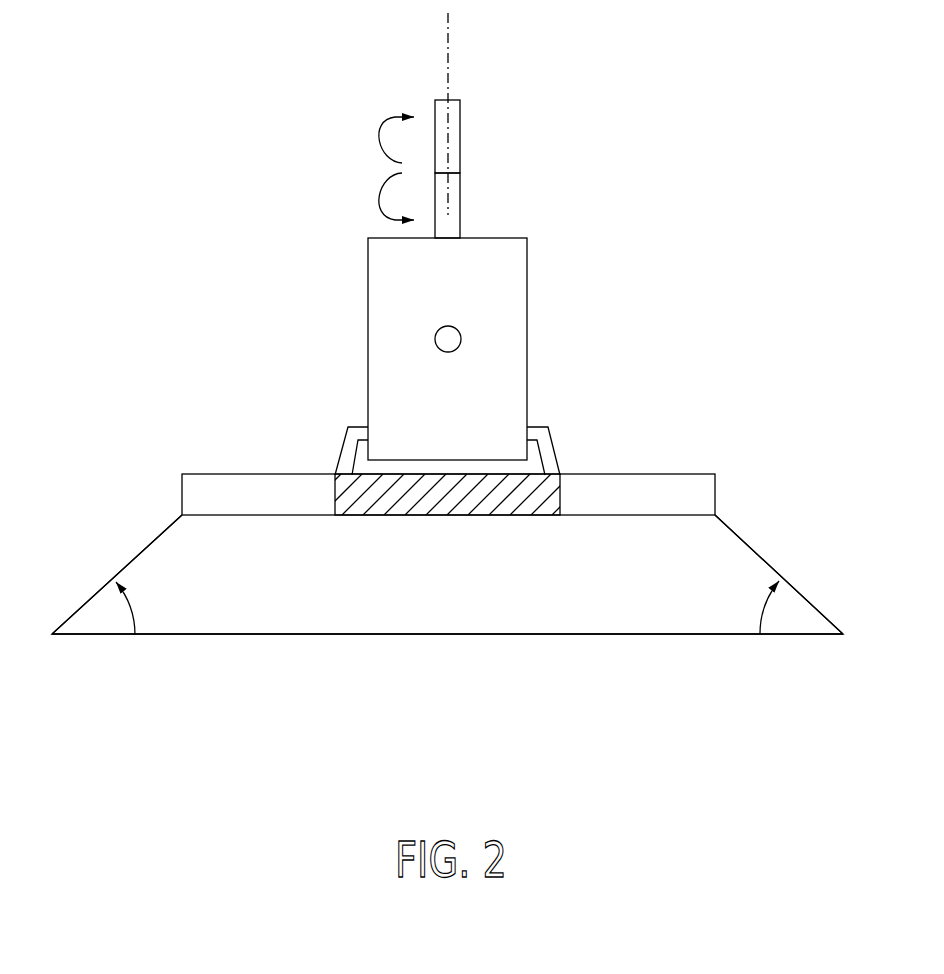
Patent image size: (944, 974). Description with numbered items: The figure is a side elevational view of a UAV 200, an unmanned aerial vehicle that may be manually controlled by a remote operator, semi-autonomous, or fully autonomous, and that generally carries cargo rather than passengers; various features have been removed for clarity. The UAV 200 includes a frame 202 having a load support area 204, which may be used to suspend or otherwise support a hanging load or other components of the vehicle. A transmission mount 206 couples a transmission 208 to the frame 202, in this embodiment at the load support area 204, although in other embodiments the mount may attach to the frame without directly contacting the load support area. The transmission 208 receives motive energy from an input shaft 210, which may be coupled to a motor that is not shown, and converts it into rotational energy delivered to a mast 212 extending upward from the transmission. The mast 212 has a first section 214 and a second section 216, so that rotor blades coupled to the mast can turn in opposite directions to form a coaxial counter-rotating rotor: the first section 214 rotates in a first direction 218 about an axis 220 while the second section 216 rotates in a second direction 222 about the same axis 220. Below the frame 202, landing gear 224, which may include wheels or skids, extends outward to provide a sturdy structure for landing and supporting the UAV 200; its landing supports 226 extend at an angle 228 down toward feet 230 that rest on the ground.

The UAV 200 is at (713, 49).
The frame 202 is at (715, 493).
The load support area 204 is at (440, 528).
The transmission mount 206 is at (553, 448).
The transmission 208 is at (527, 285).
The input shaft 210 is at (439, 330).
The mast 212 is at (521, 169).
The first section 214 is at (460, 207).
The second section 216 is at (460, 133).
The first direction 218 is at (377, 199).
The axis 220 is at (448, 44).
The second direction 222 is at (377, 142).
The landing gear 224 is at (778, 549).
The landing support 226 is at (127, 565).
The angle 228 is at (131, 609).
The foot 230 is at (447, 634).